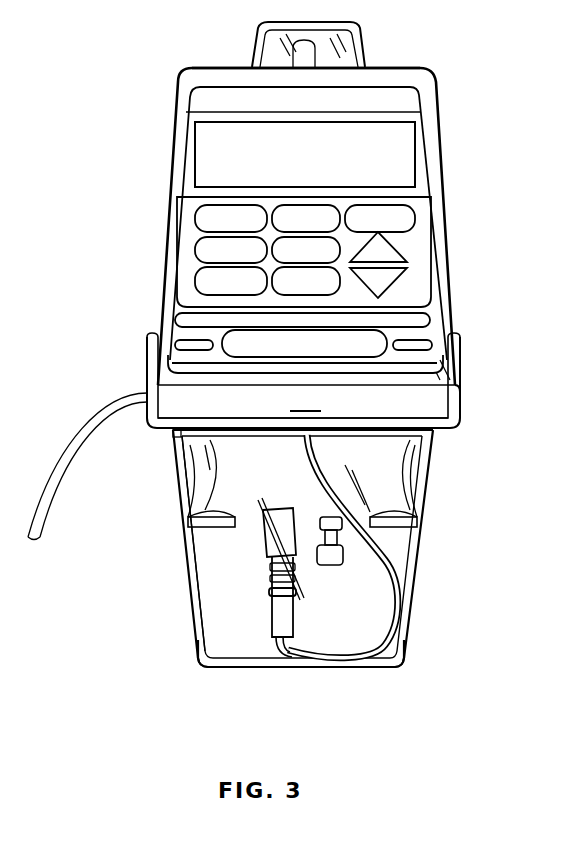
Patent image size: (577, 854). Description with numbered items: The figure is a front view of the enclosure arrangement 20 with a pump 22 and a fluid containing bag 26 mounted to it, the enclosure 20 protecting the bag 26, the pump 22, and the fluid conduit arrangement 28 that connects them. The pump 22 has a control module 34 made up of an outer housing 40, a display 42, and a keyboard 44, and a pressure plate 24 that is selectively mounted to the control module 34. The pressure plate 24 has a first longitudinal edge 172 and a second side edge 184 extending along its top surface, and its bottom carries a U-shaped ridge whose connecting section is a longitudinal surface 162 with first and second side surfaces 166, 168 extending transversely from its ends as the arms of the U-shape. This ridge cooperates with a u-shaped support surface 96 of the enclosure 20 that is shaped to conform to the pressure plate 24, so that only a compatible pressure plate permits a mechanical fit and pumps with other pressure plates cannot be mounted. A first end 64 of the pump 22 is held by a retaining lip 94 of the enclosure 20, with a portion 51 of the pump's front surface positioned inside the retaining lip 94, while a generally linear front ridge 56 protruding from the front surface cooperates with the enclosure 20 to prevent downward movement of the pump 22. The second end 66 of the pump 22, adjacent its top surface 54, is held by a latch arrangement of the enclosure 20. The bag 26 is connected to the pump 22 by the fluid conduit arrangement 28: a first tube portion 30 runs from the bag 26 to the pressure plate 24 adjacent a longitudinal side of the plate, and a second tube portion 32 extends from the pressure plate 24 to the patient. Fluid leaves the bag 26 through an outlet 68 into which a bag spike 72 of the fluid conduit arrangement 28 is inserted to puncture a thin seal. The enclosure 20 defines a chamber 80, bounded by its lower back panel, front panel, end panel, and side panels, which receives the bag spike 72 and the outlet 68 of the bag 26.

The enclosure arrangement 20 is at (419, 676).
The pump 22 is at (343, 226).
The pressure plate 24 is at (460, 355).
The fluid containing bag 26 is at (430, 465).
The fluid conduit arrangement 28 is at (270, 635).
The first tube portion 30 is at (397, 550).
The second tube portion 32 is at (87, 466).
The control module 34 is at (347, 209).
The outer housing 40 is at (473, 227).
The display 42 is at (372, 118).
The keyboard 44 is at (265, 252).
The portion of front surface 51 is at (430, 398).
The top surface 54 is at (287, 43).
The front ridge 56 is at (270, 340).
The first end 64 is at (157, 425).
The second end 66 is at (273, 45).
The outlet 68 is at (262, 541).
The bag spike 72 is at (273, 600).
The chamber 80 is at (222, 642).
The retaining lip 94 is at (305, 399).
The u-shaped support surface 96 is at (462, 414).
The longitudinal surface 162 is at (250, 435).
The first side surface 166 is at (437, 432).
The second side surface 168 is at (167, 445).
The first longitudinal edge 172 is at (143, 362).
The second side edge 184 is at (460, 370).